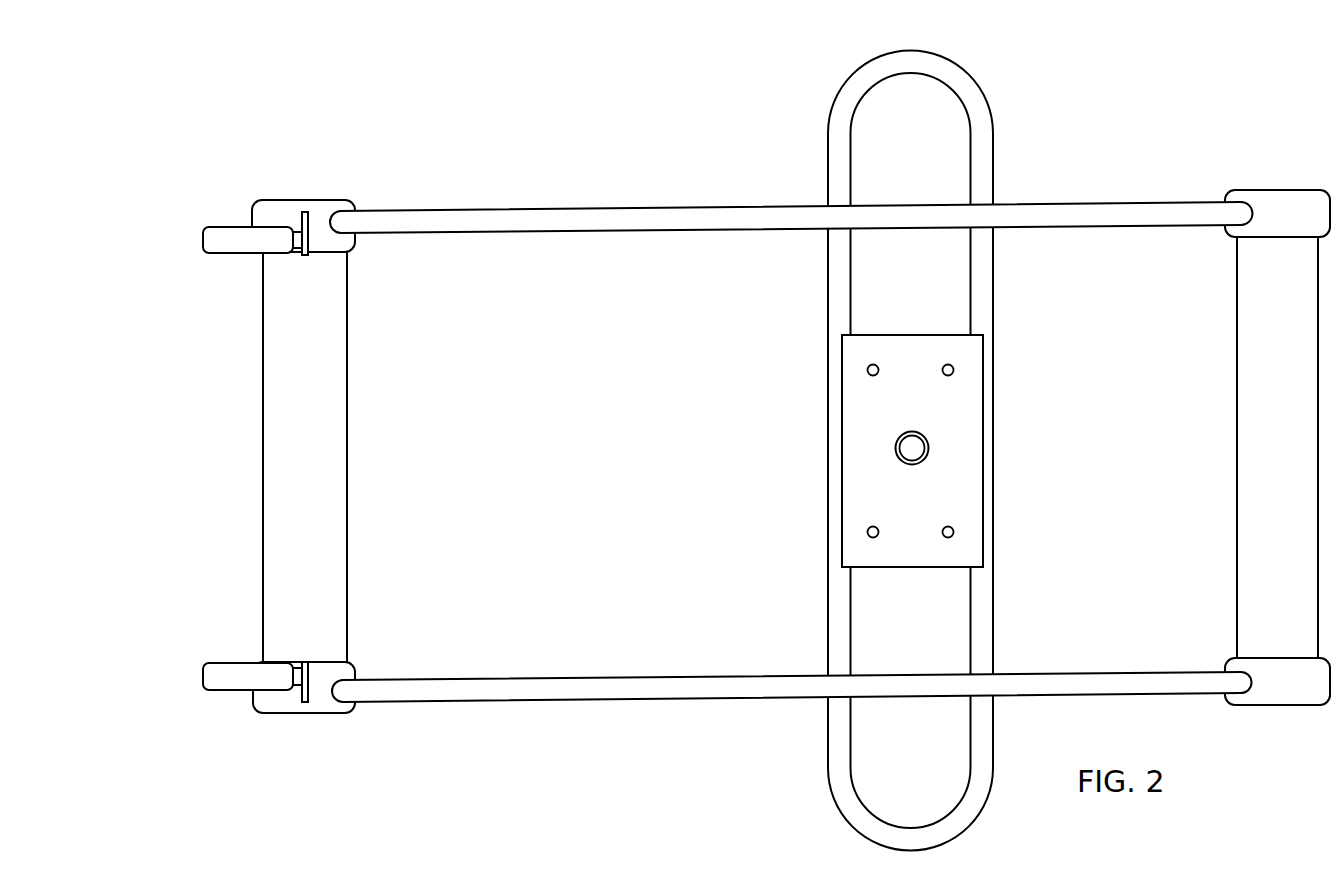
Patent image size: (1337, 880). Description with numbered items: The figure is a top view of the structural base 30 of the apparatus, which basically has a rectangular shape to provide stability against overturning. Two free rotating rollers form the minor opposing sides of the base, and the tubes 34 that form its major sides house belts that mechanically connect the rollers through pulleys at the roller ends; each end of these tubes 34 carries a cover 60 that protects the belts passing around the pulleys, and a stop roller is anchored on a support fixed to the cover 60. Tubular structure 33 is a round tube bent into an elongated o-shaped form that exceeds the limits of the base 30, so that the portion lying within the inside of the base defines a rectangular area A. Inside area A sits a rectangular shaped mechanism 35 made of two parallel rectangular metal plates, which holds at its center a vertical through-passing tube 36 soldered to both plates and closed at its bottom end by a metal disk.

The structural base 30 is at (757, 444).
The tubular structure 33 is at (996, 134).
The tube handle 34 is at (476, 208).
The rectangular shaped mechanism 35 is at (974, 420).
The vertical through-passing tube 36 is at (895, 456).
The cover 60 is at (292, 718).
The area A is at (920, 627).